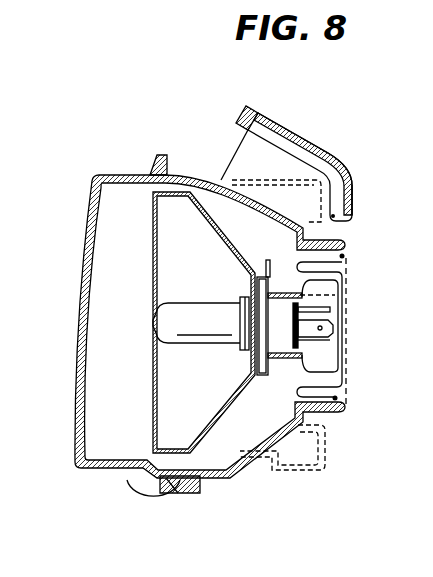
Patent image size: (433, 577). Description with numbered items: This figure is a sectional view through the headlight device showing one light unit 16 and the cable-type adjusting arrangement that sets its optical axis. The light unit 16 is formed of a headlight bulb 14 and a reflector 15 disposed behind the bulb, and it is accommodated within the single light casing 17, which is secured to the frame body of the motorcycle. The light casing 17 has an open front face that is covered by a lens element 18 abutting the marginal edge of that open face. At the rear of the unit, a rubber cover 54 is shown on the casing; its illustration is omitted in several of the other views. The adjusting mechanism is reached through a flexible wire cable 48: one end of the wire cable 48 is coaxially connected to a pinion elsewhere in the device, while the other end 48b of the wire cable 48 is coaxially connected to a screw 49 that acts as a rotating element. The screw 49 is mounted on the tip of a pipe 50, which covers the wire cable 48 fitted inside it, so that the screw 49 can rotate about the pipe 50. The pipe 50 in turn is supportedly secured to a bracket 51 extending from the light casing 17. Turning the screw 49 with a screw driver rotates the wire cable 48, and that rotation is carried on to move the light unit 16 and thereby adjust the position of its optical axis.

The headlight bulb 14 is at (207, 337).
The reflector 15 is at (162, 440).
The light unit 16 is at (131, 379).
The light casing 17 is at (290, 437).
The lens element 18 is at (83, 306).
The flexible wire cable 48 is at (323, 143).
The other end of the wire cable 48b is at (290, 127).
The screw 49 is at (248, 107).
The pipe 50 is at (353, 193).
The bracket 51 is at (250, 155).
The rubber cover 54 is at (346, 248).